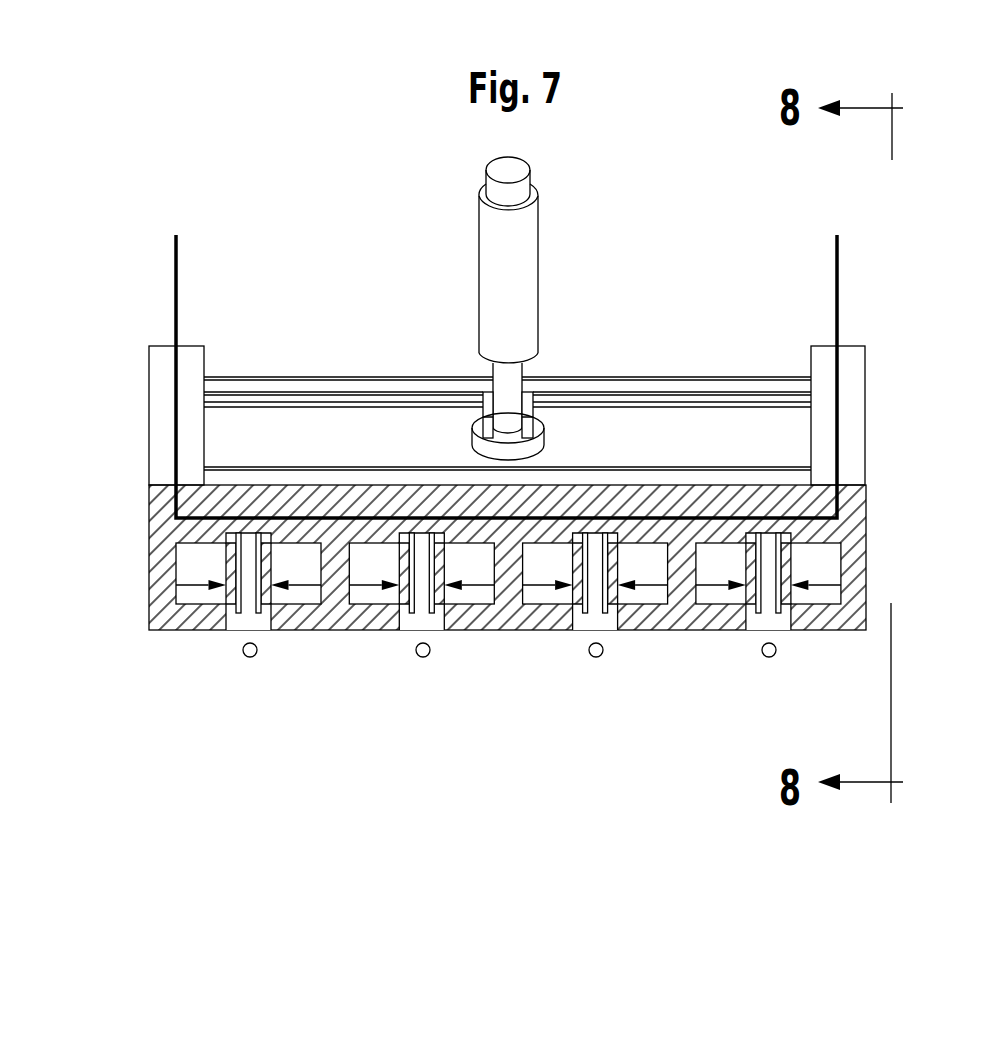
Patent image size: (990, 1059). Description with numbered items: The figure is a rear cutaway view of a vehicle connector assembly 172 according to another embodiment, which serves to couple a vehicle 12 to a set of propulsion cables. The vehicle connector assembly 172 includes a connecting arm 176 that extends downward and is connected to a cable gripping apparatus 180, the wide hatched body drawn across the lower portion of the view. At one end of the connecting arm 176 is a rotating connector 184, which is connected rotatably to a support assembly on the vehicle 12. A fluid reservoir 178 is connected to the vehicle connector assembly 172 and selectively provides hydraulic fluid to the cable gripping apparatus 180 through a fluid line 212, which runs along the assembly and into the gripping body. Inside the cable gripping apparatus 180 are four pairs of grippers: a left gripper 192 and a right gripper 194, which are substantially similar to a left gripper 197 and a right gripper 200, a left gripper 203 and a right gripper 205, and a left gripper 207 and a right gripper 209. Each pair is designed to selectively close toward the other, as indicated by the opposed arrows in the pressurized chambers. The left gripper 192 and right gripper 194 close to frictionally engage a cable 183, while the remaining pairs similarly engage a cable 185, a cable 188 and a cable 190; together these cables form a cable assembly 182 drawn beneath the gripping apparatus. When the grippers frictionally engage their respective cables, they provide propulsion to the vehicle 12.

The vehicle 12 is at (408, 175).
The vehicle connector assembly 172 is at (511, 297).
The connecting arm 176 is at (512, 387).
The fluid reservoir 178 is at (527, 292).
The cable gripping apparatus 180 is at (160, 595).
The cable assembly 182 is at (503, 704).
The cable 183 is at (250, 657).
The rotating connector 184 is at (505, 165).
The cable 185 is at (423, 657).
The cable 188 is at (596, 657).
The cable 190 is at (769, 657).
The left gripper 192 is at (241, 613).
The right gripper 194 is at (257, 613).
The left gripper 197 is at (411, 613).
The right gripper 200 is at (431, 613).
The left gripper 203 is at (585, 613).
The right gripper 205 is at (605, 613).
The left gripper 207 is at (758, 613).
The right gripper 209 is at (778, 613).
The fluid line 212 is at (178, 268).